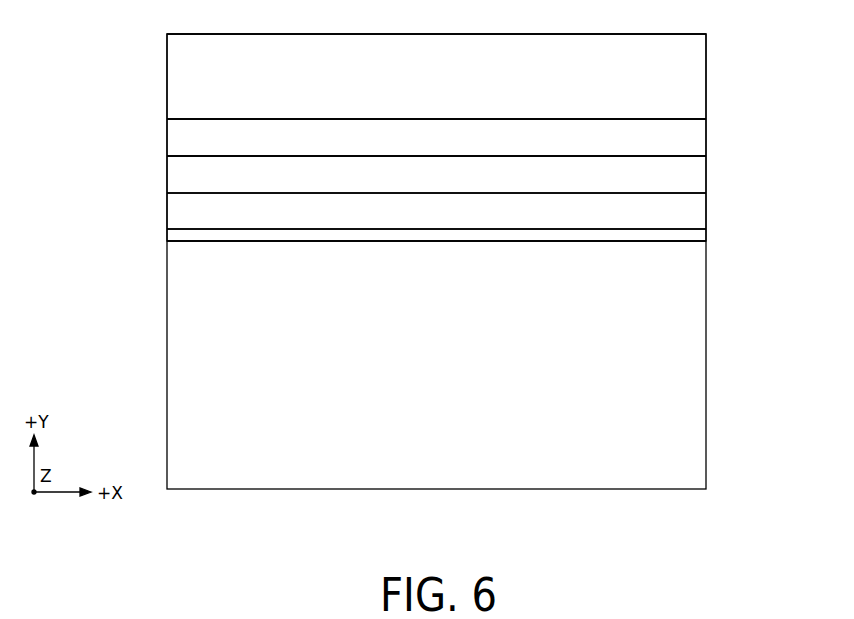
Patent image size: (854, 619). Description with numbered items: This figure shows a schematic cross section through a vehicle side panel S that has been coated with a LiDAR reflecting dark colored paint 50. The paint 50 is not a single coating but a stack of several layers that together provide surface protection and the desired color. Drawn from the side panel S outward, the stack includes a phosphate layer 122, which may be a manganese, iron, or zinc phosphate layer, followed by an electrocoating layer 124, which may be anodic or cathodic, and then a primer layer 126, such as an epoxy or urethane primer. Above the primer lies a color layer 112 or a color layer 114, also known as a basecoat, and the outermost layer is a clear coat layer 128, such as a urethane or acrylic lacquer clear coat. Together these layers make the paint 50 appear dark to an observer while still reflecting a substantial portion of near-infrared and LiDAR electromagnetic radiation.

The side panel S is at (695, 365).
The clear coat layer 128 is at (707, 73).
The color layer 112 is at (707, 137).
The color layer 114 is at (707, 137).
The primer layer 126 is at (707, 172).
The electrocoating layer 124 is at (707, 209).
The phosphate layer 122 is at (707, 238).
The LiDAR reflecting dark colored paint 50 is at (158, 33).